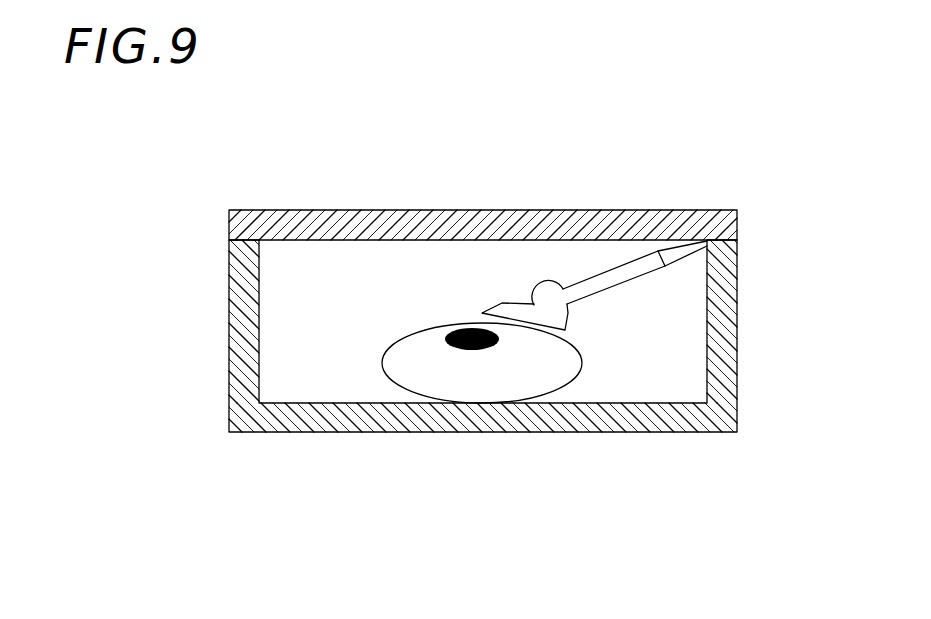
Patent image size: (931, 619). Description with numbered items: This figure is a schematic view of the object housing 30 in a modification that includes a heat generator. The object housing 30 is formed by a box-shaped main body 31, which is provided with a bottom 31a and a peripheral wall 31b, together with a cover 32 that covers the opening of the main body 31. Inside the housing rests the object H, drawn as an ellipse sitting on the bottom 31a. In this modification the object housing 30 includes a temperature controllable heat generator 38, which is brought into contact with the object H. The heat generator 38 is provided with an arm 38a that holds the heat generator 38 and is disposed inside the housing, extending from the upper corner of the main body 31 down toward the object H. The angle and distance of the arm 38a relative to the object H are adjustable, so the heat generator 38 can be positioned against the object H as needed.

The object housing 30 is at (473, 322).
The main body 31 is at (473, 368).
The bottom 31a is at (462, 430).
The peripheral wall 31b is at (227, 340).
The cover 32 is at (292, 217).
The heat generator 38 is at (501, 306).
The arm 38a is at (608, 276).
The object H is at (413, 345).